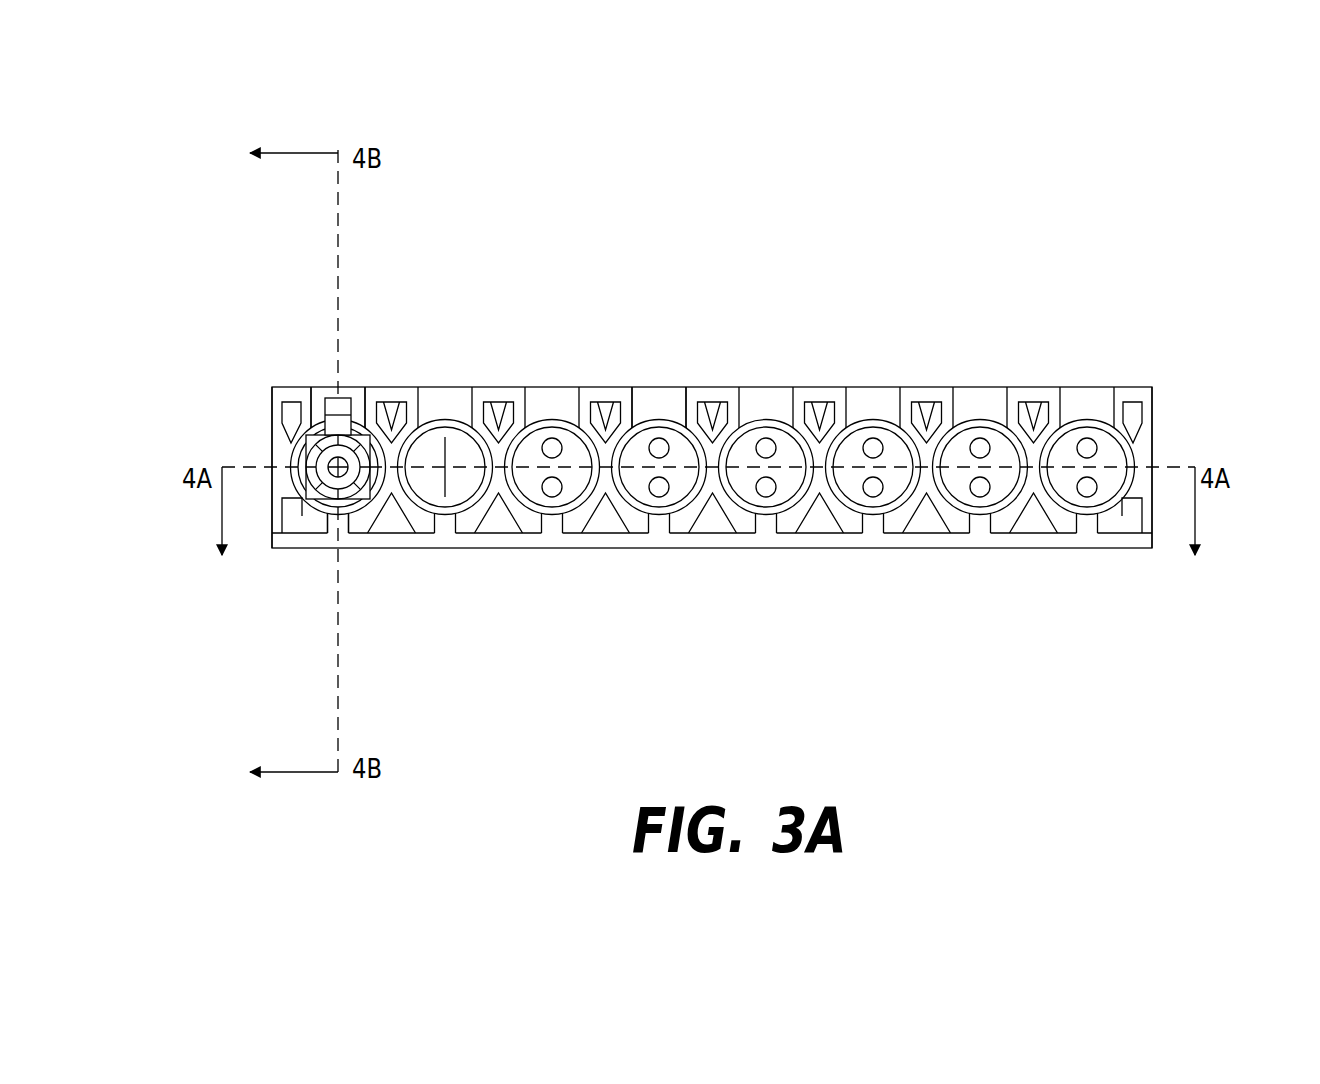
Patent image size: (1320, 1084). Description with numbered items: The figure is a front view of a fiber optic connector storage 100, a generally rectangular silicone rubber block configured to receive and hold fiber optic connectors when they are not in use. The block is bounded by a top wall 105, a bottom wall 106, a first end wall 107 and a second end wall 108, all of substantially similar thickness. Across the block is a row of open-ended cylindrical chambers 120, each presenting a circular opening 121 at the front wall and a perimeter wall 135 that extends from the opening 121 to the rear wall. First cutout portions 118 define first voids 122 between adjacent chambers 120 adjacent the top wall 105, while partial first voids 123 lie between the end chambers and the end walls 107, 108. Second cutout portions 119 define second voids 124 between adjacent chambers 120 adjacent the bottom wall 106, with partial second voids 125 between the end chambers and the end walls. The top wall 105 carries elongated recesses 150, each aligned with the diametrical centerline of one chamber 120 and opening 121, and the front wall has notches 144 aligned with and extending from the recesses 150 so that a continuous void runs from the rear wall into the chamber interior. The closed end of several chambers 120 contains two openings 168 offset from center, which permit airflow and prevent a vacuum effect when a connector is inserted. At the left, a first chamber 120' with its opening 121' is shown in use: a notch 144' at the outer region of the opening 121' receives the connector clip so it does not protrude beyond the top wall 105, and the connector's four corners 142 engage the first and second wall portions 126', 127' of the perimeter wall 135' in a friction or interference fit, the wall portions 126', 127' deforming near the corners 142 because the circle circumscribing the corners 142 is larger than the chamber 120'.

The fiber optic connector storage 100 is at (607, 288).
The top wall 105 is at (338, 404).
The bottom wall 106 is at (840, 549).
The first end wall 107 is at (275, 442).
The second end wall 108 is at (1153, 418).
The first cutout portion 118 is at (612, 415).
The second cutout portion 119 is at (640, 535).
The chamber 120 is at (753, 398).
The first chamber 120' is at (234, 540).
The opening 121 is at (803, 561).
The opening of first chamber 121' is at (392, 534).
The first void 122 is at (822, 410).
The partial first void 123 is at (272, 410).
The second void 124 is at (425, 525).
The partial second void 125 is at (323, 540).
The first wall portion 126' is at (281, 383).
The second wall portion 127' is at (275, 553).
The perimeter wall 135 is at (926, 391).
The perimeter wall of first chamber 135' is at (403, 594).
The corners 142 is at (292, 412).
The notch 144 is at (684, 341).
The notch of first chamber 144' is at (291, 343).
The elongated recess 150 is at (460, 392).
The opening 168 is at (550, 438).